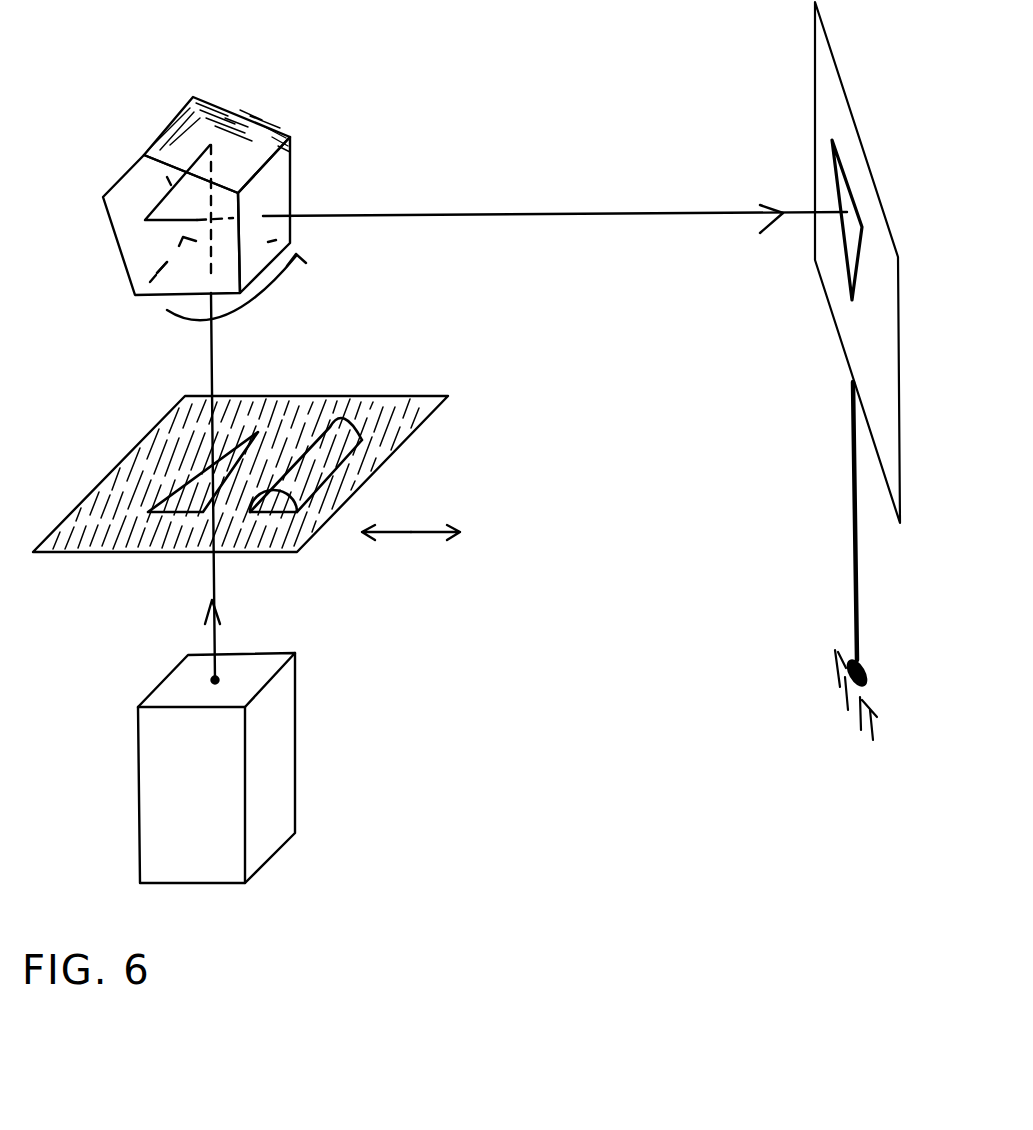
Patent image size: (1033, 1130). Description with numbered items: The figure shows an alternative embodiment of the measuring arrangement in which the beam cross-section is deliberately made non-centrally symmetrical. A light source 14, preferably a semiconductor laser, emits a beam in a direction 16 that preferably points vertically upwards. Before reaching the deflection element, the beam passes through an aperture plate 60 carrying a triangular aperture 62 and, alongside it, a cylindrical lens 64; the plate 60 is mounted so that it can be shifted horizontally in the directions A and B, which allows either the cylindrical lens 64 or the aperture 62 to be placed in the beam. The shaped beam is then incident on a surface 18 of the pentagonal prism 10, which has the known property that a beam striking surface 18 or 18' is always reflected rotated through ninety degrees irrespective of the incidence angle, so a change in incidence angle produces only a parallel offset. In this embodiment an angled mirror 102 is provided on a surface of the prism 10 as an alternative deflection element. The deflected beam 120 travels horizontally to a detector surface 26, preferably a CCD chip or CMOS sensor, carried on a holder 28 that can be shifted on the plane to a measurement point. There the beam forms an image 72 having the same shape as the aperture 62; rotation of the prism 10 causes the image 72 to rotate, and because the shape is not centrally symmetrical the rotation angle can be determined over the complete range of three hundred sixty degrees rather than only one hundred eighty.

The pentagonal prism 10 is at (120, 177).
The angled mirror 102 is at (247, 130).
The surface of the pentagonal prism 18' is at (310, 211).
The surface of the pentagonal prism 18 is at (130, 309).
The output light beam 120 is at (500, 209).
The detector surface 26 is at (823, 50).
The image 72 is at (843, 257).
The holder 28 is at (852, 533).
The aperture plate 60 is at (252, 453).
The triangular aperture 62 is at (157, 513).
The cylindrical lens 64 is at (362, 447).
The direction of the incident beam 16 is at (220, 590).
The light source 14 is at (297, 763).
The direction of plate shift A is at (385, 546).
The direction of plate shift B is at (441, 545).